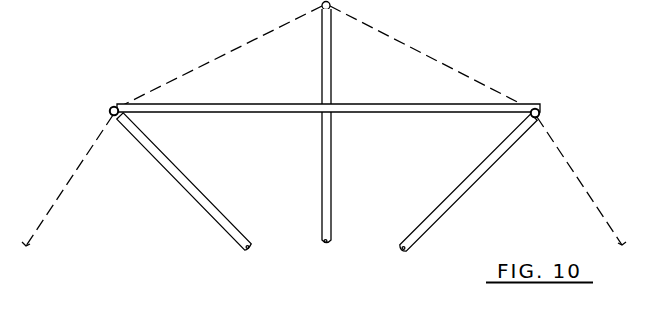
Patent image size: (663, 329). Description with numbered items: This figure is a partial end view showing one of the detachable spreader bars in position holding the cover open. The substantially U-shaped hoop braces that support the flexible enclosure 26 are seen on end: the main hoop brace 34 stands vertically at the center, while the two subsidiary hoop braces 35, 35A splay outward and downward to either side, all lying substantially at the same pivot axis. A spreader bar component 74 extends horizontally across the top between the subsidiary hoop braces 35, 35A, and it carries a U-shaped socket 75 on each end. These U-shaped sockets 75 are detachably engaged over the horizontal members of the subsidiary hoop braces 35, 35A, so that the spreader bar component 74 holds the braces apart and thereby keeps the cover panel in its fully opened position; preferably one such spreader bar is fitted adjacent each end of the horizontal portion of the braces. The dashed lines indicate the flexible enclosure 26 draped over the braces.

The flexible enclosure 26 is at (192, 61).
The main hoop brace 34 is at (320, 57).
The spreader bar component 74 is at (378, 108).
The subsidiary hoop brace 35 is at (212, 203).
The subsidiary hoop brace 35A is at (477, 165).
The U-shaped sockets 75 is at (112, 106).